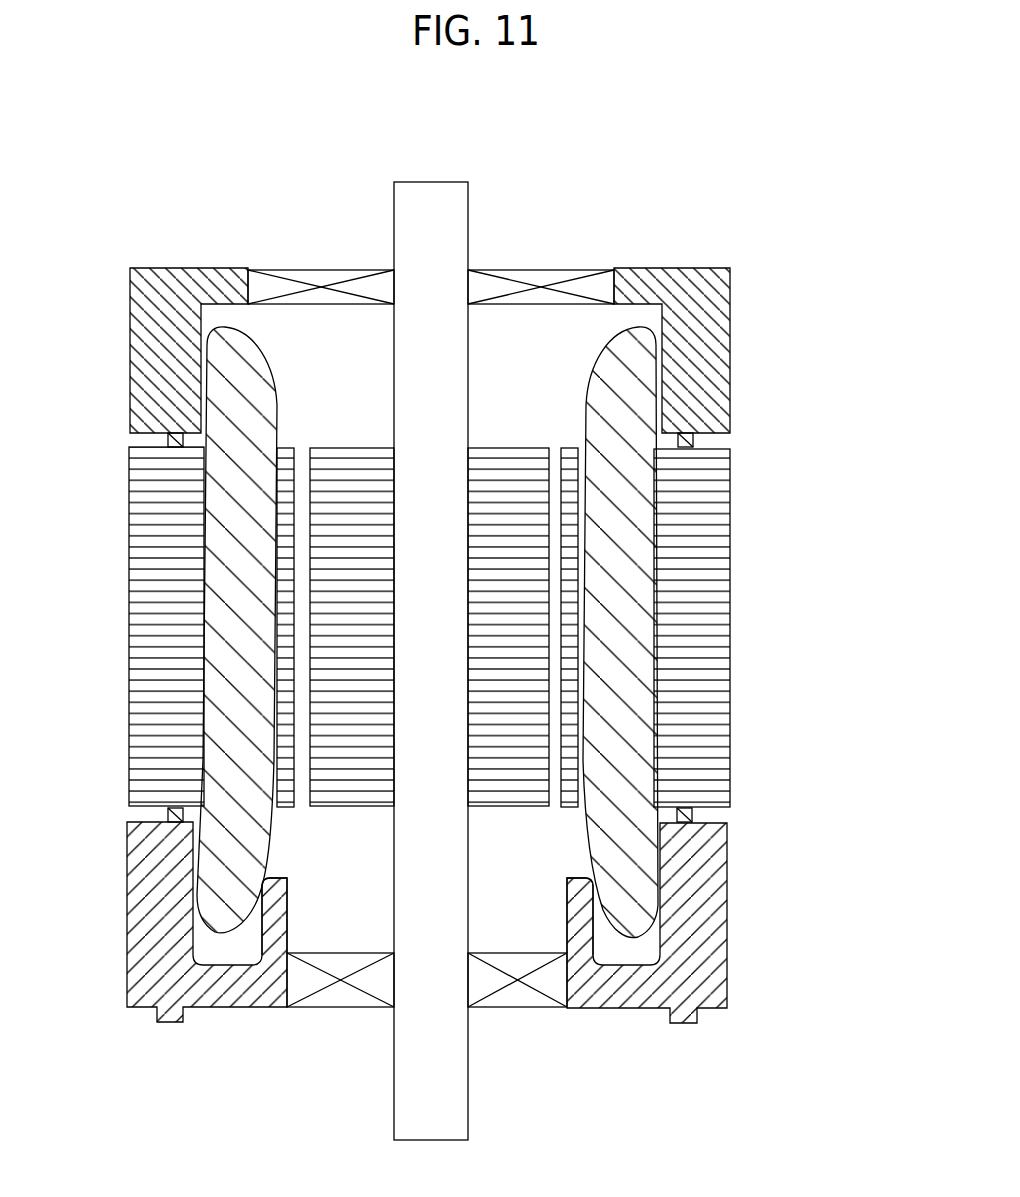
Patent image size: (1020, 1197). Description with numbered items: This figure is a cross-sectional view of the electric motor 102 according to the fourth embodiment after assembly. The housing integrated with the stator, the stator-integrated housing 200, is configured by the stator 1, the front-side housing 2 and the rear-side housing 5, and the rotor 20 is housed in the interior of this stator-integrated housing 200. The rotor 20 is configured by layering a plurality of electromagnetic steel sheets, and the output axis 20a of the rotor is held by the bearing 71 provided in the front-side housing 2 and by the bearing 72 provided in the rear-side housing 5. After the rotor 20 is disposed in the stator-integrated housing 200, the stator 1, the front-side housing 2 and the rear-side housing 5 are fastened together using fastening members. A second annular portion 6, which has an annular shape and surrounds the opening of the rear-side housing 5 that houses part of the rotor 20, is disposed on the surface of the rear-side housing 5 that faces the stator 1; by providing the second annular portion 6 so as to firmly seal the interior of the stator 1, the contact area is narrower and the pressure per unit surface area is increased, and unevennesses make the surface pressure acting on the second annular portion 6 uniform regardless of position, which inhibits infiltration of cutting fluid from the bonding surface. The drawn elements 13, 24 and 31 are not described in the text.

The stator 1 is at (128, 605).
The front-side housing 2 is at (127, 888).
The rear-side housing 5 is at (130, 317).
The second annular portion 6 is at (168, 440).
The stator coil 13 is at (213, 354).
The rotor 20 is at (498, 448).
The output axis 20a is at (470, 188).
The projection of lower bracket 24 is at (287, 918).
The seal member 31 is at (163, 817).
The bearing 71 is at (332, 1008).
The bearing 72 is at (320, 268).
The electric motor 102 is at (703, 160).
The stator-integrated housing 200 is at (818, 272).